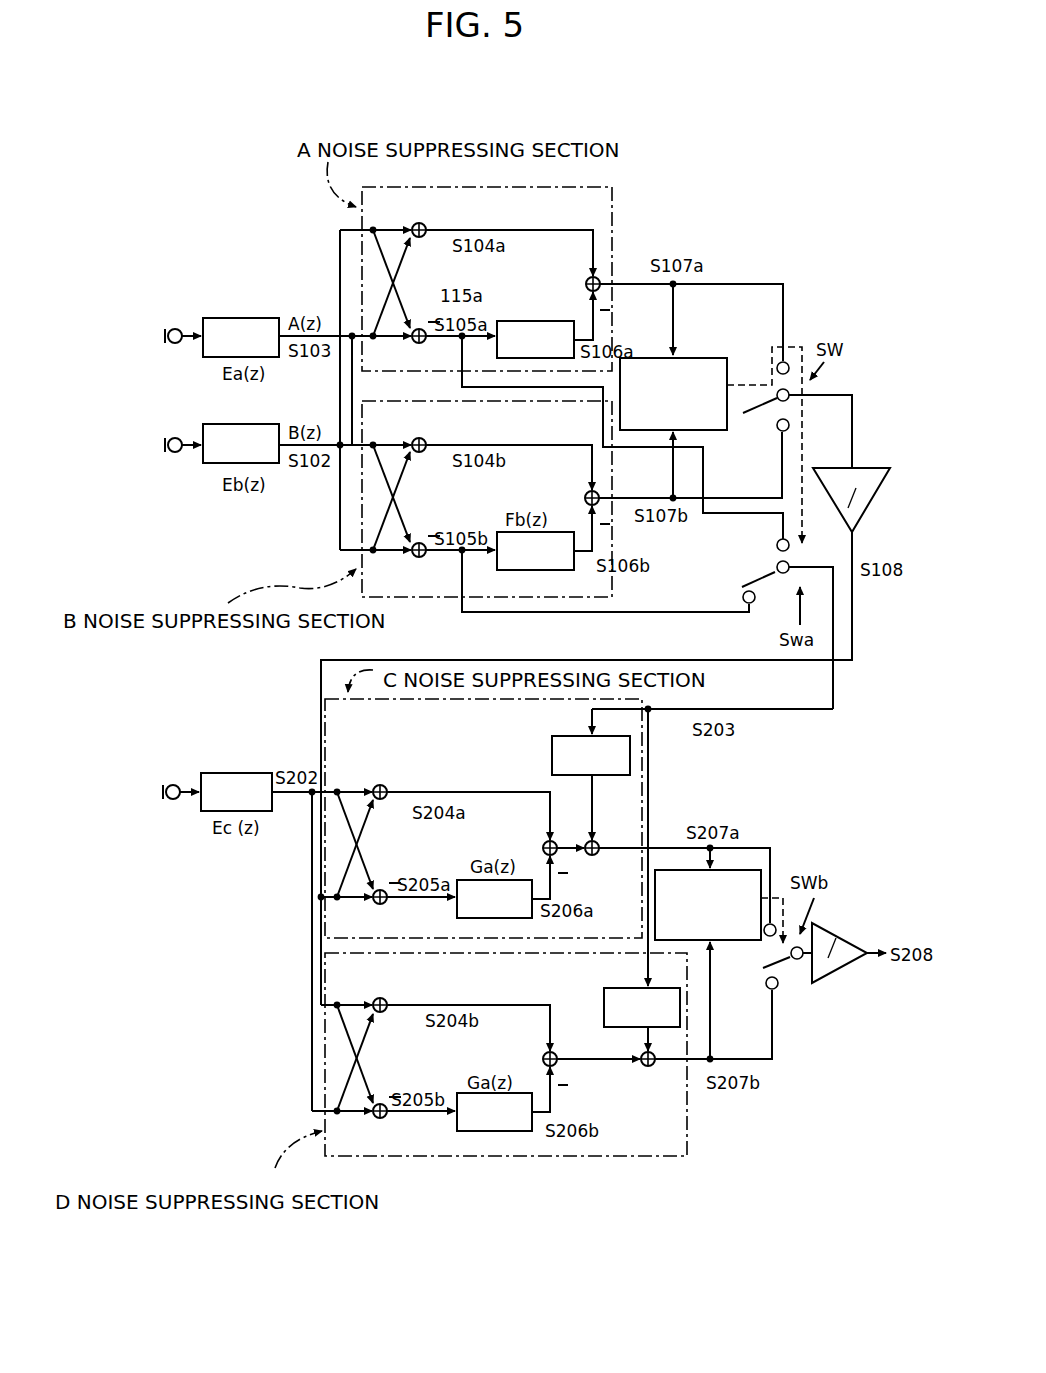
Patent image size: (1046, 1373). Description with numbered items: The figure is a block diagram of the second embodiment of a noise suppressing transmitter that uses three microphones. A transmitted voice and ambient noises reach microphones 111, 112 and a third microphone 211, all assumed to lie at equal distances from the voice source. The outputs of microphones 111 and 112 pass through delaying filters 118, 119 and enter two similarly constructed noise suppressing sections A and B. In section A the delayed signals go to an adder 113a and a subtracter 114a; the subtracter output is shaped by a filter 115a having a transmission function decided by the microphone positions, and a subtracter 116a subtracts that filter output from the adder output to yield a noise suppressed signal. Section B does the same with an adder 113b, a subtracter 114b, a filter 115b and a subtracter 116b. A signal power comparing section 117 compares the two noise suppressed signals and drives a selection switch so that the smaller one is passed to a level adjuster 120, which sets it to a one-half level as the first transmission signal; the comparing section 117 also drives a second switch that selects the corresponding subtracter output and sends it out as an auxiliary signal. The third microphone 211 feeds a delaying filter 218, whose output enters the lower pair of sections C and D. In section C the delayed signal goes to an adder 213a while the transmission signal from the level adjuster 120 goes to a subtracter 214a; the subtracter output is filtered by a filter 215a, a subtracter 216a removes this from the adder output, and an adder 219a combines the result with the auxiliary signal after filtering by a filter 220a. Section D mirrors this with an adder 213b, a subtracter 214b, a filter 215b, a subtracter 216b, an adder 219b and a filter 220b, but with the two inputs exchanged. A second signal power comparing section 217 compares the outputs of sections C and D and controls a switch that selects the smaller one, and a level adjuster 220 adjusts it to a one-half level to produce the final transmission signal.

The microphone 111 is at (174, 328).
The microphone 112 is at (174, 437).
The filter 118 is at (232, 318).
The filter 119 is at (232, 424).
The adder 113a is at (423, 224).
The subtracter 114a is at (419, 344).
The filter 115a is at (535, 328).
The subtracter 116a is at (584, 286).
The signal power comparing section 117 is at (679, 377).
The adder 113b is at (436, 438).
The subtracter 114b is at (419, 558).
The filter 115b is at (530, 572).
The subtracter 116b is at (584, 500).
The level adjuster 120 is at (880, 468).
The microphone 211 is at (170, 800).
The filter 218 is at (210, 773).
The adder 213a is at (379, 784).
The subtracter 214a is at (385, 906).
The filter 215a is at (500, 918).
The subtracter 216a is at (542, 850).
The adder 219a is at (598, 857).
The filter 220a is at (554, 738).
The signal power comparing section 217 is at (660, 868).
The adder 213b is at (379, 997).
The subtracter 214b is at (385, 1120).
The filter 215b is at (500, 1131).
The subtracter 216b is at (542, 1061).
The adder 219b is at (648, 1068).
The filter 220b is at (620, 988).
The level adjuster 220 is at (818, 990).